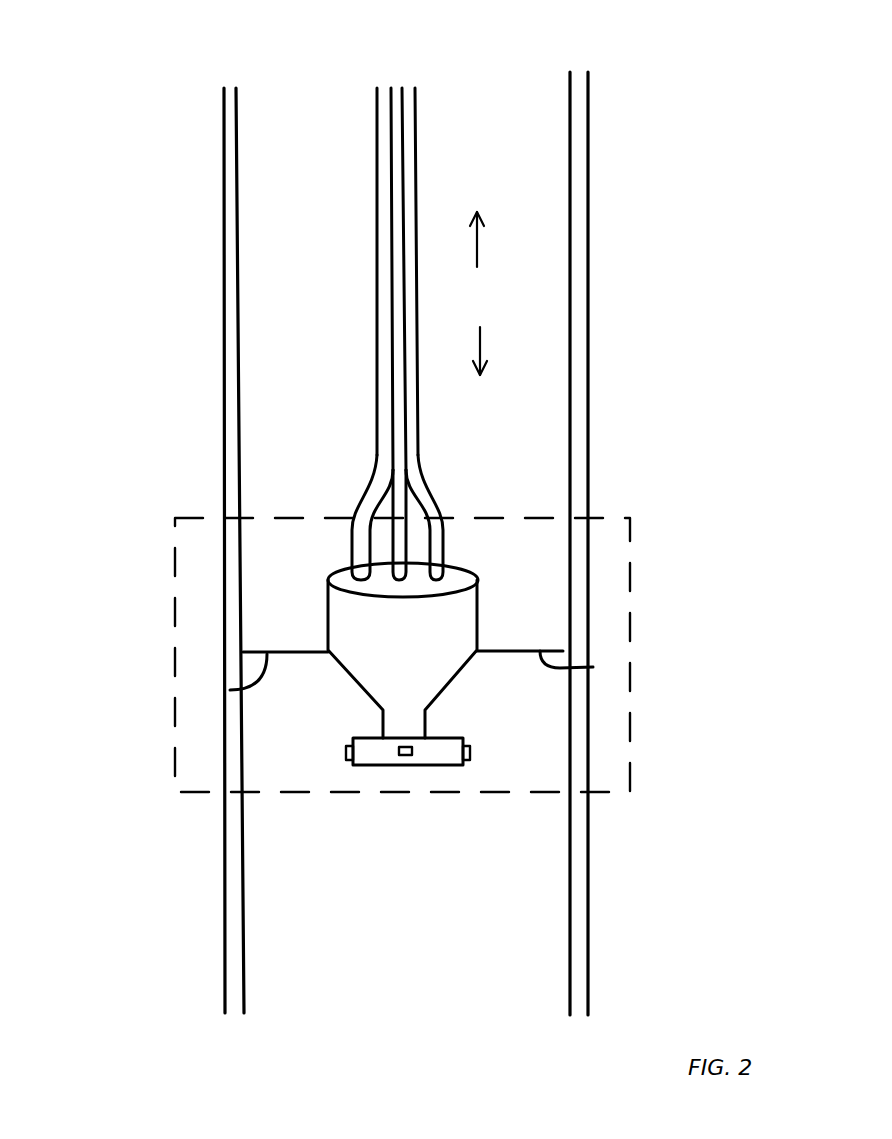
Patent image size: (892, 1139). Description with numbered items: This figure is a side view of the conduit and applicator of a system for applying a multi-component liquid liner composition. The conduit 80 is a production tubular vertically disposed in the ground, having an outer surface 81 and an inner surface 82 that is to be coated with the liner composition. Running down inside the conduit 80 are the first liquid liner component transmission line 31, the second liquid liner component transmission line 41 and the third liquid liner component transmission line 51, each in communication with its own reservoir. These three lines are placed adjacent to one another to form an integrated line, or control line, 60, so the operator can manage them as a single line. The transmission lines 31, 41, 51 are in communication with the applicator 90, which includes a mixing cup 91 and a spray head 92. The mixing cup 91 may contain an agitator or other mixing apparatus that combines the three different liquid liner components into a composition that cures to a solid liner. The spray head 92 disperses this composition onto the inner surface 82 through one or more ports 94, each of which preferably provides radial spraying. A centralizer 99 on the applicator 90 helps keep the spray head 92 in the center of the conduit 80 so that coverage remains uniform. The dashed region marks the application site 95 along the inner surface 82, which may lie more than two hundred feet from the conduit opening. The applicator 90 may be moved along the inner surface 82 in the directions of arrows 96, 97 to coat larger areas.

The conduit 80 is at (590, 403).
The outer surface 81 is at (590, 330).
The inner surface 82 is at (545, 277).
The integrated line 60 is at (372, 368).
The first liquid liner component transmission line 31 is at (383, 303).
The second liquid liner component transmission line 41 is at (397, 235).
The third liquid liner component transmission line 51 is at (410, 150).
The arrow 96 is at (491, 239).
The arrow 97 is at (494, 351).
The application site 95 is at (632, 598).
The applicator 90 is at (315, 620).
The mixing cup 91 is at (452, 633).
The spray head 92 is at (470, 757).
The centralizer 99 is at (230, 690).
The port 94 is at (346, 752).